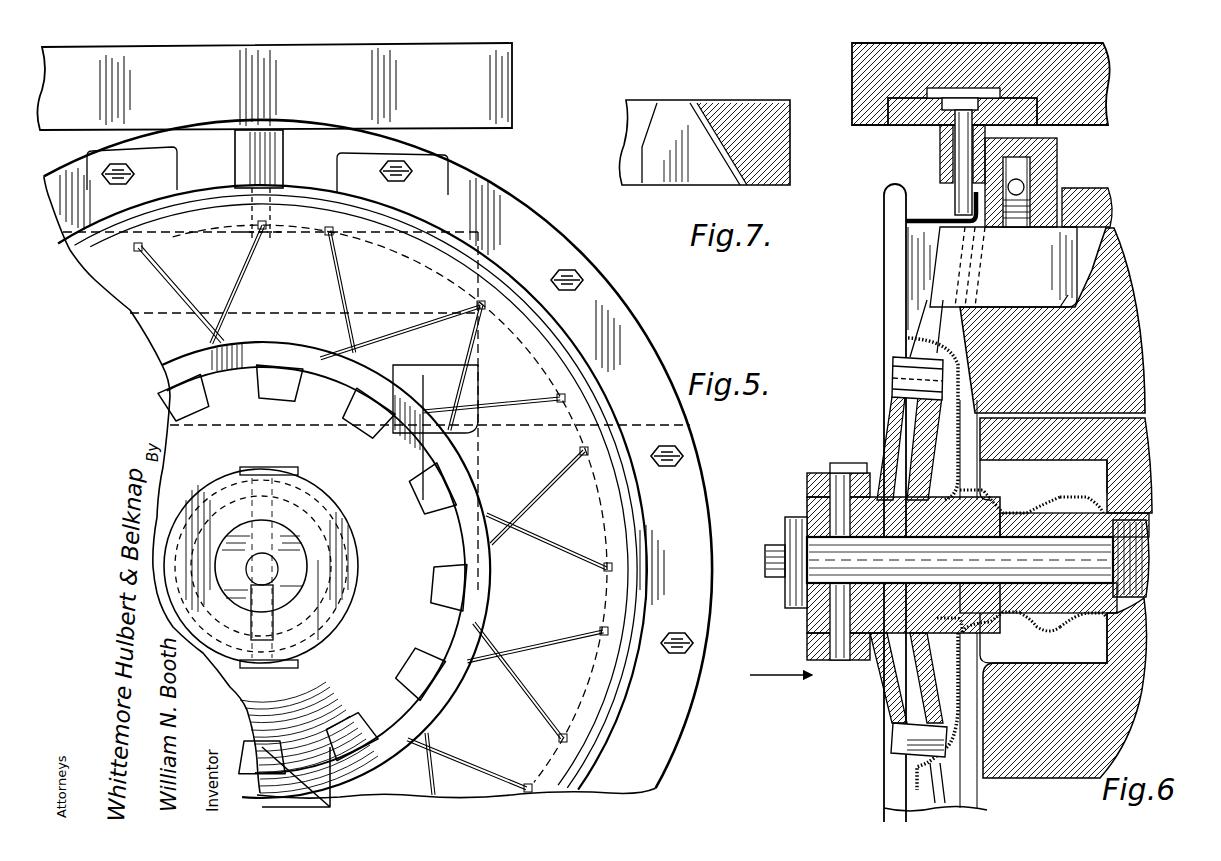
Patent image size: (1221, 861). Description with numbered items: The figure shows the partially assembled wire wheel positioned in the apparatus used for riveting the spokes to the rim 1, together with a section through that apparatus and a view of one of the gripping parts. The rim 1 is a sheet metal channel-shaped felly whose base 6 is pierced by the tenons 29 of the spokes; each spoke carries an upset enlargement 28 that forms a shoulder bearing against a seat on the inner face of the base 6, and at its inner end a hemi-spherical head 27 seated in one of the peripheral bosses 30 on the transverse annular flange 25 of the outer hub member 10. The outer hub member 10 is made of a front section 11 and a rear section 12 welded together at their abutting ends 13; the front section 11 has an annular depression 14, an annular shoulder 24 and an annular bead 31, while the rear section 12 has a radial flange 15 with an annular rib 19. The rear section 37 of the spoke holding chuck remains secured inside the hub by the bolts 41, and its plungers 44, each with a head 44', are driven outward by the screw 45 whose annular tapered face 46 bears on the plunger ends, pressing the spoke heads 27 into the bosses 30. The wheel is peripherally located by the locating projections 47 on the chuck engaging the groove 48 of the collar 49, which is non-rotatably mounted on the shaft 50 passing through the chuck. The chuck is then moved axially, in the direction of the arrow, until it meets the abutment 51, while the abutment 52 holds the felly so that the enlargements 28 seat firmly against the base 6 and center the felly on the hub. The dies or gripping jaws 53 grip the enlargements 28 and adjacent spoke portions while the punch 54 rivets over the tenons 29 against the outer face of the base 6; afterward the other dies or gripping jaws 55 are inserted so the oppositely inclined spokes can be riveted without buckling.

In FIG. 5, the rim 1 is at (548, 332).
In FIG. 6, the rim 1 is at (882, 205).
In FIG. 5, the base of the felly 6 is at (530, 362).
In FIG. 6, the base of the felly 6 is at (900, 237).
In FIG. 6, the outer hub member 10 is at (1140, 478).
In FIG. 6, the front section 11 is at (1022, 510).
In FIG. 6, the rear section 12 is at (980, 640).
In FIG. 6, the welded abutting ends 13 is at (985, 494).
In FIG. 6, the annular depression 14 is at (1032, 618).
In FIG. 6, the radial flange 15 is at (898, 418).
In FIG. 6, the annular rib 19 is at (893, 378).
In FIG. 6, the annular shoulder 24 is at (1025, 622).
In FIG. 6, the transverse annular flange 25 is at (1000, 312).
In FIG. 6, the hemi-spherical heads 27 is at (930, 346).
In FIG. 5, the enlargements 28 is at (422, 314).
In FIG. 6, the enlargements 28 is at (985, 235).
In FIG. 5, the tenons 29 is at (492, 268).
In FIG. 6, the peripheral bosses 30 is at (955, 316).
In FIG. 6, the annular bead 31 is at (1065, 495).
In FIG. 5, the rear section of spoke holding chuck 37 is at (326, 570).
In FIG. 6, the rear section of spoke holding chuck 37 is at (880, 662).
In FIG. 5, the bolts 41 is at (470, 382).
In FIG. 6, the bolts 41 is at (925, 320).
In FIG. 5, the plungers 44 is at (332, 586).
In FIG. 6, the plungers 44 is at (917, 525).
In FIG. 6, the head 44' is at (893, 740).
In FIG. 6, the screw 45 is at (830, 618).
In FIG. 6, the annular tapered face 46 is at (948, 490).
In FIG. 5, the locating projections 47 is at (270, 466).
In FIG. 6, the locating projections 47 is at (835, 465).
In FIG. 5, the groove 48 is at (322, 505).
In FIG. 6, the groove 48 is at (830, 488).
In FIG. 5, the collar 49 is at (305, 532).
In FIG. 6, the collar 49 is at (838, 505).
In FIG. 5, the shaft 50 is at (322, 546).
In FIG. 6, the shaft 50 is at (784, 533).
In FIG. 6, the abutment 51 is at (1085, 625).
In FIG. 5, the abutment 52 is at (277, 159).
In FIG. 6, the abutment 52 is at (955, 172).
In FIG. 5, the dies or gripping jaws 53 is at (361, 479).
In FIG. 6, the dies or gripping jaws 53 is at (925, 265).
In FIG. 5, the punch 54 is at (284, 214).
In FIG. 6, the punch 54 is at (956, 196).
In FIG. 7, the dies or gripping jaws 55 is at (716, 144).